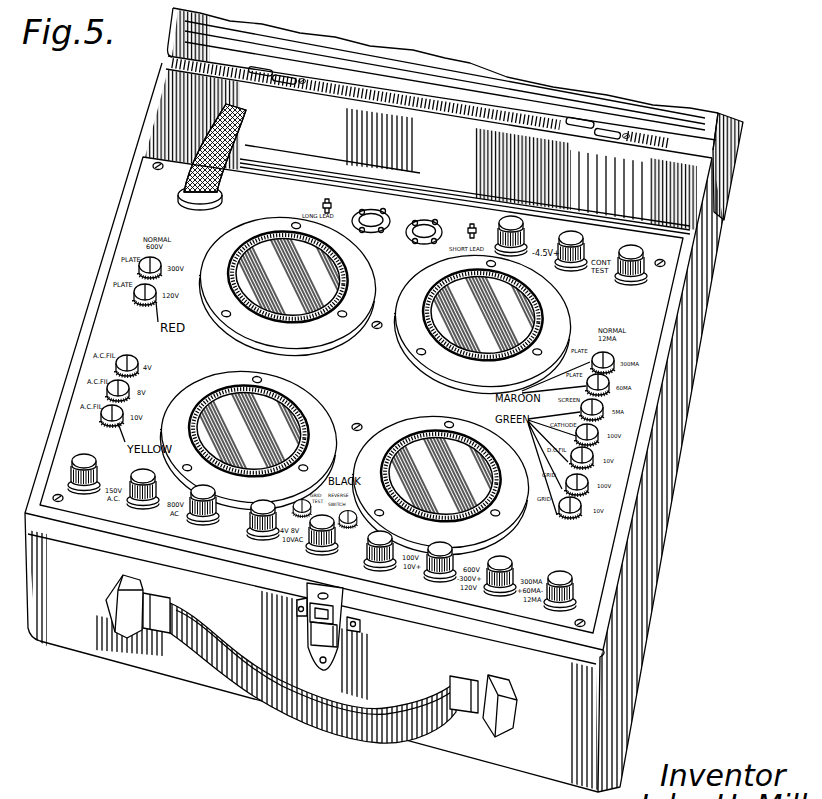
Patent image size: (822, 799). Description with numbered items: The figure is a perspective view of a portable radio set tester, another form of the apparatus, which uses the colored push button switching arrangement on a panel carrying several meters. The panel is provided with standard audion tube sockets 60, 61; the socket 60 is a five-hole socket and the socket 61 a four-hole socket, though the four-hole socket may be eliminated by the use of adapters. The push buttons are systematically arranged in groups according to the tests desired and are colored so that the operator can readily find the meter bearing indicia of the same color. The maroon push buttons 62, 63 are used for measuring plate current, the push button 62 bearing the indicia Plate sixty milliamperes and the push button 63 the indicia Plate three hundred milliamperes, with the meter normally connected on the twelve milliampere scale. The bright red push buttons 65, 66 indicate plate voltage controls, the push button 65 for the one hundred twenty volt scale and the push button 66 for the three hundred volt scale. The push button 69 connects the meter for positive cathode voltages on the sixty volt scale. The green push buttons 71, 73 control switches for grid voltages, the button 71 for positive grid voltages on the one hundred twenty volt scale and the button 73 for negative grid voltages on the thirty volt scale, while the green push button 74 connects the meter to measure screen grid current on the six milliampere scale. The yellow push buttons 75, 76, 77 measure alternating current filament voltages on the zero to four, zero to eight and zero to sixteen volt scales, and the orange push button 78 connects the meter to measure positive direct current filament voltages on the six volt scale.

The audion tube socket 60 is at (370, 209).
The audion tube socket 61 is at (427, 220).
The push button 62 is at (609, 381).
The push button 63 is at (612, 356).
The push button 65 is at (134, 292).
The push button 66 is at (146, 260).
The push button 69 is at (598, 432).
The push button 71 is at (588, 482).
The push button 73 is at (581, 505).
The push button 74 is at (603, 406).
The push button 75 is at (122, 357).
The push button 76 is at (112, 383).
The push button 77 is at (106, 408).
The push button 78 is at (593, 455).